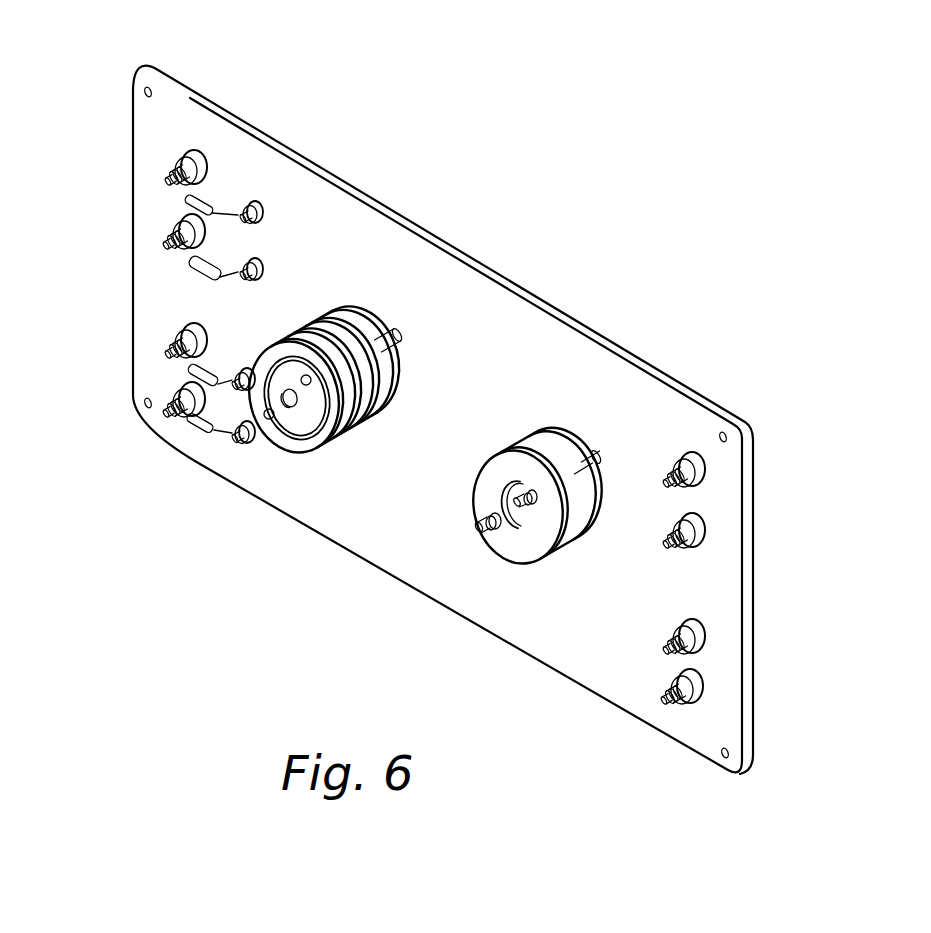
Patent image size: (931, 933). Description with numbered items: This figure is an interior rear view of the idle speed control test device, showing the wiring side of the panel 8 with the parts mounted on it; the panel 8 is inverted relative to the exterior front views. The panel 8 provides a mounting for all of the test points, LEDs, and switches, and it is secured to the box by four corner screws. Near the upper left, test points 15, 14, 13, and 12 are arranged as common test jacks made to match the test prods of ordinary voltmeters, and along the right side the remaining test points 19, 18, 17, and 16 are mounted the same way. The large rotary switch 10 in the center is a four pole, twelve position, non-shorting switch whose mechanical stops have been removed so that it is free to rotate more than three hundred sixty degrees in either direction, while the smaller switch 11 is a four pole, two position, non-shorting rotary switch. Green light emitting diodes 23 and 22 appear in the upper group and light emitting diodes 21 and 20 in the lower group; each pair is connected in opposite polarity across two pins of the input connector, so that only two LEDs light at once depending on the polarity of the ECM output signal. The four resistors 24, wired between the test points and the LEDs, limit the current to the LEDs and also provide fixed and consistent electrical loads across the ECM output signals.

The panel 8 is at (440, 239).
The switch 10 is at (340, 312).
The switch 11 is at (557, 445).
The test point 12 is at (164, 409).
The test point 13 is at (176, 342).
The test point 14 is at (178, 223).
The test point 15 is at (183, 158).
The test point 16 is at (705, 688).
The test point 17 is at (706, 637).
The test point 18 is at (706, 531).
The test point 19 is at (706, 469).
The light emitting diode 20 is at (247, 432).
The light emitting diode 21 is at (248, 390).
The light emitting diode 22 is at (262, 268).
The light emitting diode 23 is at (251, 202).
The resistor 24 is at (217, 385).